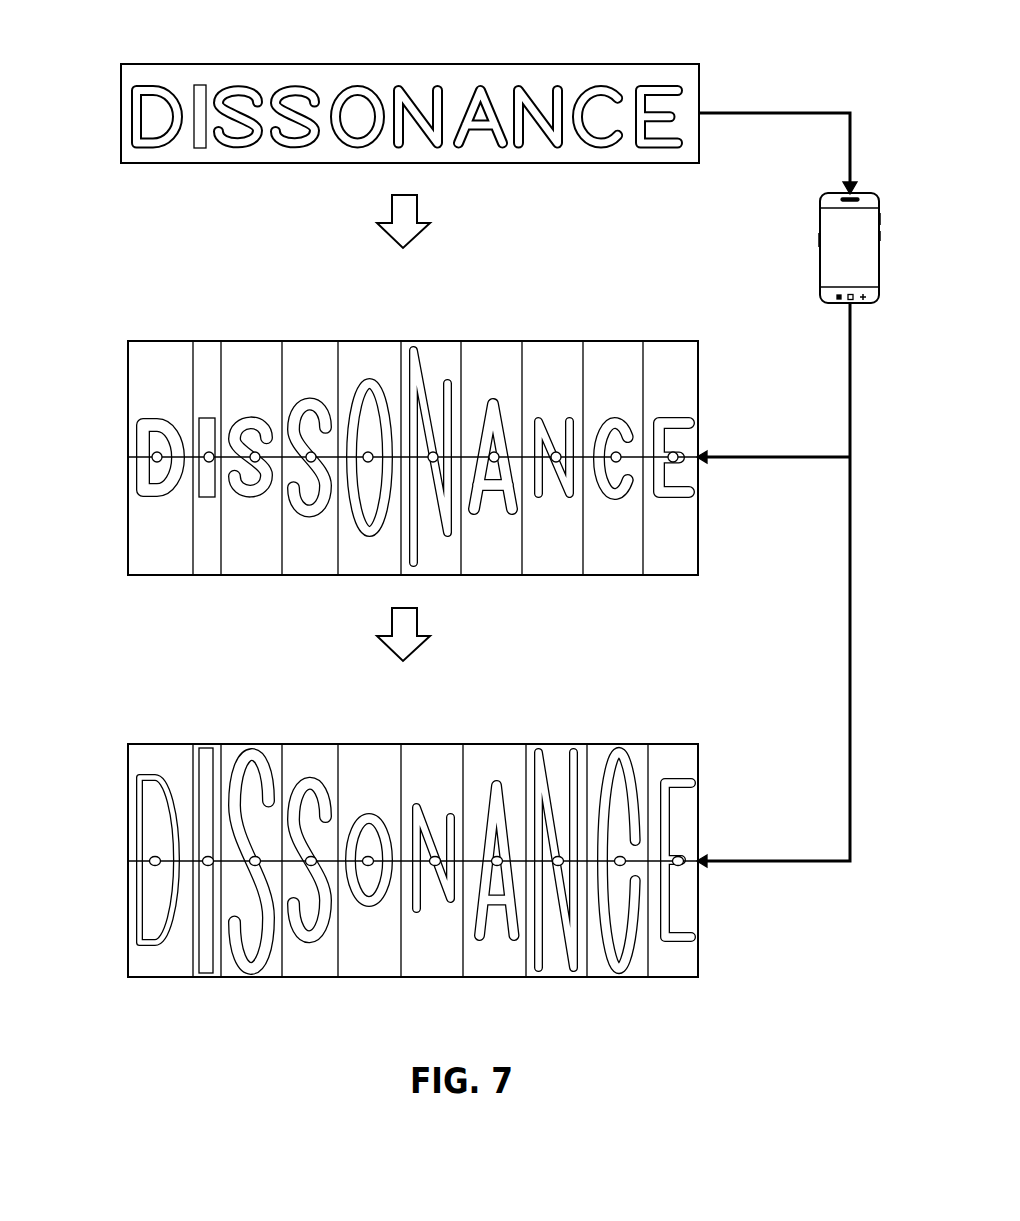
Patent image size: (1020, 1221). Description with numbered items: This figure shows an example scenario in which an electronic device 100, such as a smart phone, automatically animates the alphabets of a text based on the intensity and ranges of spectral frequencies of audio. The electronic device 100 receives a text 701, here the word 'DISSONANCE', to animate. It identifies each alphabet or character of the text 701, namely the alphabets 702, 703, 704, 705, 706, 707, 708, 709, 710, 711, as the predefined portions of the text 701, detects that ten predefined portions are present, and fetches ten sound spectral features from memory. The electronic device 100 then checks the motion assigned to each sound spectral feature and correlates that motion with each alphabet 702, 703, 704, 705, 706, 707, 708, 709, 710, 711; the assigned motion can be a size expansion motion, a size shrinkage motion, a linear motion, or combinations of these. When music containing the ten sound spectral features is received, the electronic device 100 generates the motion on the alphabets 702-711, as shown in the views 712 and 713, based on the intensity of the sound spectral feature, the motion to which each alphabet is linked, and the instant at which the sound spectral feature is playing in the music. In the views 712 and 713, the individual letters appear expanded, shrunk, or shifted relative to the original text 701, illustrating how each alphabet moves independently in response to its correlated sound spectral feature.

The text 701 is at (121, 105).
The alphabet 702 is at (145, 83).
The alphabet 703 is at (200, 83).
The alphabet 704 is at (248, 83).
The alphabet 705 is at (300, 83).
The alphabet 706 is at (353, 83).
The alphabet 707 is at (405, 83).
The alphabet 708 is at (473, 83).
The alphabet 709 is at (525, 83).
The alphabet 710 is at (600, 83).
The alphabet 711 is at (653, 83).
The animated text view 712 is at (130, 381).
The animated text view 713 is at (128, 762).
The electronic device 100 is at (850, 248).